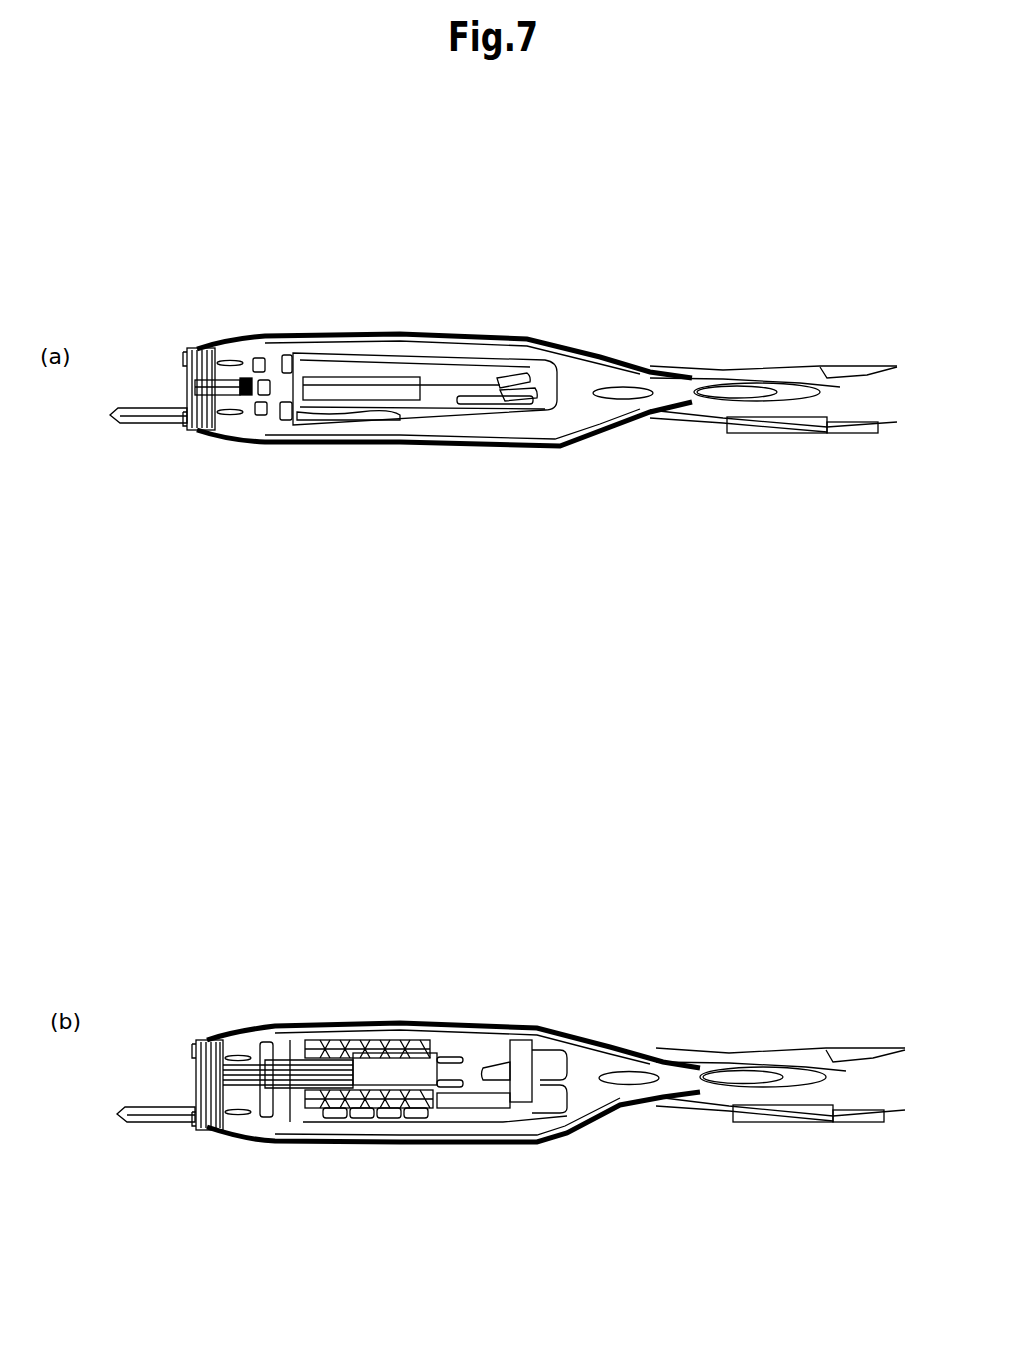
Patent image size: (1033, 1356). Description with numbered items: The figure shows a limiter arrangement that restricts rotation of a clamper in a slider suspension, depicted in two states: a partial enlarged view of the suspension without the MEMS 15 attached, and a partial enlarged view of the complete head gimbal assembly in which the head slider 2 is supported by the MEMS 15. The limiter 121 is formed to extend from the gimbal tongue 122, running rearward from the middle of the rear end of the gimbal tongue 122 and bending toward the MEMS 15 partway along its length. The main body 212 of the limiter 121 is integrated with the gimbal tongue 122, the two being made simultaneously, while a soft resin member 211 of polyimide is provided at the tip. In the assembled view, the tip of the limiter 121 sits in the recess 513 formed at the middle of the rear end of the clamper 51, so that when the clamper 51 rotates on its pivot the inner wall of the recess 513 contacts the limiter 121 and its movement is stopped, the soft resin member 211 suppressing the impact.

The limiter 121 is at (516, 207).
The gimbal tongue 122 is at (357, 373).
The soft resin member 211 is at (497, 372).
The main body 212 is at (453, 382).
The MEMS 15 is at (262, 1027).
The head slider 2 is at (413, 1060).
The clamper 51 is at (513, 1057).
The recess 513 is at (540, 1055).